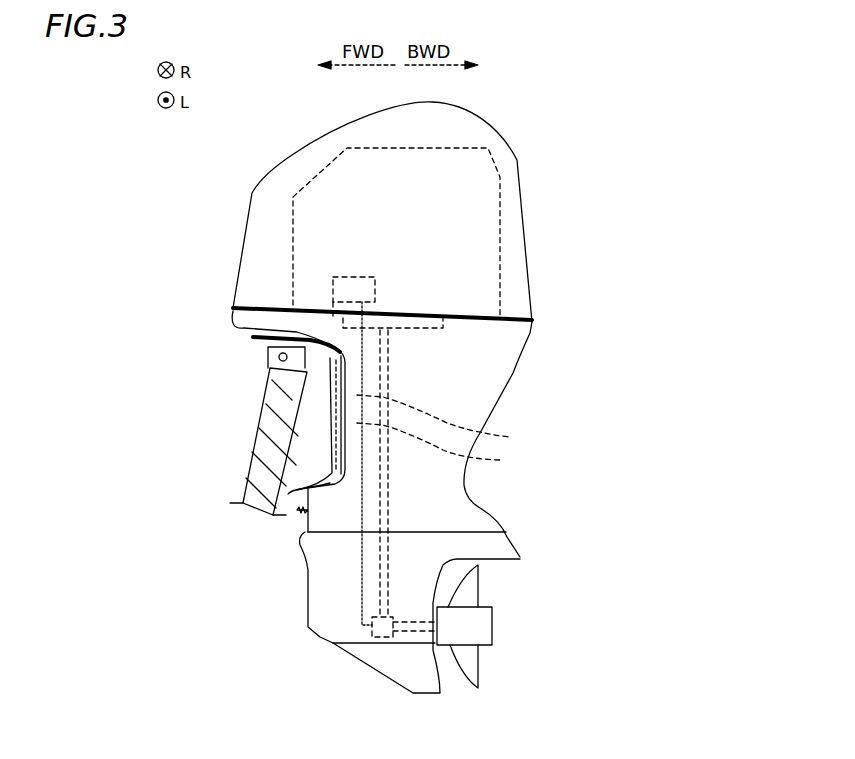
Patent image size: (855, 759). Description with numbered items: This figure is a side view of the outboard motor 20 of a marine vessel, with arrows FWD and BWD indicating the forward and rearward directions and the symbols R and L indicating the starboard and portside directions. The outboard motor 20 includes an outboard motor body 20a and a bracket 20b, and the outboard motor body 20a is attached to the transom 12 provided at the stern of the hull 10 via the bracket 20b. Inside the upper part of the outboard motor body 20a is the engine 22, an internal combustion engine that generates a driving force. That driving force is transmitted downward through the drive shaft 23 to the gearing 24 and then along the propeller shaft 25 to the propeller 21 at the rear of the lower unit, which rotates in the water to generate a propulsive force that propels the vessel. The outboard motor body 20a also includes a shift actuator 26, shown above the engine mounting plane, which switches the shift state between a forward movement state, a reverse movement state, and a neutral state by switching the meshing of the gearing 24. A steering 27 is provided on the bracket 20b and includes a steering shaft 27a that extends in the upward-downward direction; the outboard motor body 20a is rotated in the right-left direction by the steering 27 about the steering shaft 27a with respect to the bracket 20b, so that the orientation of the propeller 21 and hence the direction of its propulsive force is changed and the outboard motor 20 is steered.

The hull 10 is at (236, 440).
The transom 12 is at (248, 470).
The outboard motor 20 is at (274, 130).
The outboard motor body 20a is at (226, 212).
The bracket 20b is at (268, 368).
The propeller 21 is at (472, 670).
The engine 22 is at (500, 217).
The drive shaft 23 is at (377, 567).
The gearing 24 is at (380, 645).
The propeller shaft 25 is at (417, 640).
The shift actuator 26 is at (333, 285).
The steering 27 is at (446, 421).
The steering shaft 27a is at (448, 448).